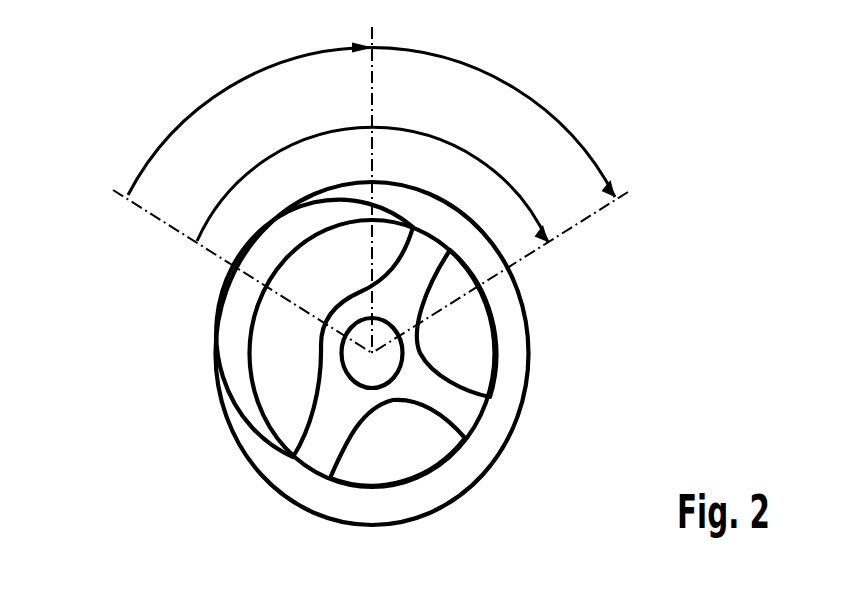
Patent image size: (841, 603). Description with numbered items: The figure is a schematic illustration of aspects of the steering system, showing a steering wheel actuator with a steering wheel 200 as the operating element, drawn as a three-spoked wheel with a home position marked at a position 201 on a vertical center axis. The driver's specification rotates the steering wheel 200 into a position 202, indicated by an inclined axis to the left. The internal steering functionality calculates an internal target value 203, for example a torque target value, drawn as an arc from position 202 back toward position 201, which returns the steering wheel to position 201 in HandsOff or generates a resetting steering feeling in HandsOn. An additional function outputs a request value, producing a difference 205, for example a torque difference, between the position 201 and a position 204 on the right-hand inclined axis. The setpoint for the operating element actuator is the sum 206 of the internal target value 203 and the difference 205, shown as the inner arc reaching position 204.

The steering wheel 200 is at (508, 355).
The position 201 is at (372, 30).
The position 202 is at (113, 192).
The internal target value 203 is at (243, 80).
The position 204 is at (628, 192).
The difference 205 is at (500, 80).
The sum 206 is at (488, 135).